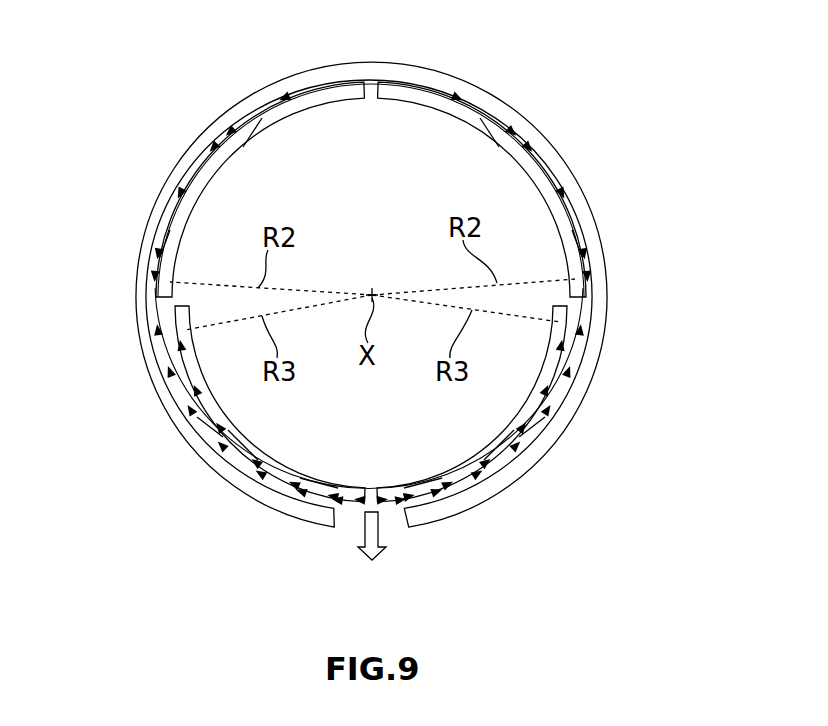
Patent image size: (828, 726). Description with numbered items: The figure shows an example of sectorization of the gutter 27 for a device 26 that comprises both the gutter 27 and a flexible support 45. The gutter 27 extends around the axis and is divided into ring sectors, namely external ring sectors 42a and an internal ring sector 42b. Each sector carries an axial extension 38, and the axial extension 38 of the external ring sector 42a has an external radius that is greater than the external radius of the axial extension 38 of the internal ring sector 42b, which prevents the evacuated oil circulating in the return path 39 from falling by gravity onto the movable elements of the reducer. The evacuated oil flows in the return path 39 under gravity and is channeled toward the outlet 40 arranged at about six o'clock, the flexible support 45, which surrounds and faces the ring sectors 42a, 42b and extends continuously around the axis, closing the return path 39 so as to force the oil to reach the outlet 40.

The device 26 is at (375, 297).
The flexible support 45 is at (522, 114).
The gutter 27 is at (375, 323).
The external ring sector 42a is at (222, 158).
The internal ring sector 42b is at (518, 442).
The axial extension 38 is at (190, 193).
The return path 39 is at (168, 216).
The outlet 40 is at (376, 540).